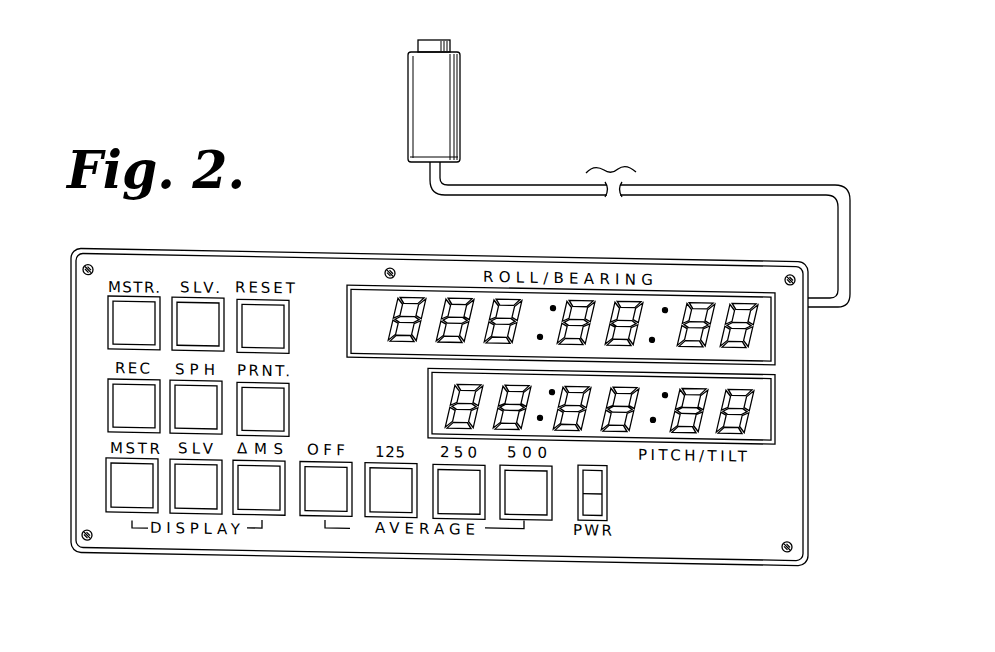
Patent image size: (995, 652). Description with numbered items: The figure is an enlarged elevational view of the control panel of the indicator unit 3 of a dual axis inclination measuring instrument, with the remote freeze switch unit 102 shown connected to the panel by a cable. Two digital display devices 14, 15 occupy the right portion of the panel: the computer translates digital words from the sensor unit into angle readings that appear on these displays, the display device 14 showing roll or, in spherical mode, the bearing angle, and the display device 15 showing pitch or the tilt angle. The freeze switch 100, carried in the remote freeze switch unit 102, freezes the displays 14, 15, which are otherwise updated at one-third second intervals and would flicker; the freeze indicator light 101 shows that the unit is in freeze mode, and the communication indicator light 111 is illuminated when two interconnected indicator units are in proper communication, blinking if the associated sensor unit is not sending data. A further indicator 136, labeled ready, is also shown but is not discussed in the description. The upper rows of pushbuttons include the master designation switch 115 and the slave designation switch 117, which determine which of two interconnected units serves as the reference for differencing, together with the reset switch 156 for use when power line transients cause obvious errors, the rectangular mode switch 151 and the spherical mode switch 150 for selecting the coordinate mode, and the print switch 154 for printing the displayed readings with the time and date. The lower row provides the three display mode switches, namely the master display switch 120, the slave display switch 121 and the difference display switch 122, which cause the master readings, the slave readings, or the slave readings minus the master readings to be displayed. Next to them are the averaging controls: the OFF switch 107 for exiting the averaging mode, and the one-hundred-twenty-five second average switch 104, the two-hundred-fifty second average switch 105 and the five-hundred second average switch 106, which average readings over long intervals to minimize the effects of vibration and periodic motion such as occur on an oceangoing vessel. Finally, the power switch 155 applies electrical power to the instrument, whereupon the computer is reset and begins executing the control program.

The indicator unit 3 is at (512, 251).
The digital display device 14 is at (718, 287).
The digital display device 15 is at (762, 379).
The freeze switch 100 is at (431, 40).
The remote freeze switch unit 102 is at (415, 118).
The master designation switch 115 is at (119, 325).
The slave designation switch 117 is at (176, 302).
The reset switch 156 is at (277, 311).
The rectangular mode switch 151 is at (115, 391).
The spherical mode switch 150 is at (185, 407).
The print switch 154 is at (283, 385).
The communication indicator light 111 is at (339, 382).
The freeze indicator light 101 is at (339, 399).
The ready indicator 136 is at (339, 416).
The master display switch 120 is at (115, 490).
The slave display switch 121 is at (180, 475).
The difference display switch 122 is at (245, 491).
The OFF switch 107 is at (305, 483).
The 125 second average switch 104 is at (370, 488).
The 250 second average switch 105 is at (473, 500).
The 500 second average switch 106 is at (535, 501).
The power switch 155 is at (597, 474).